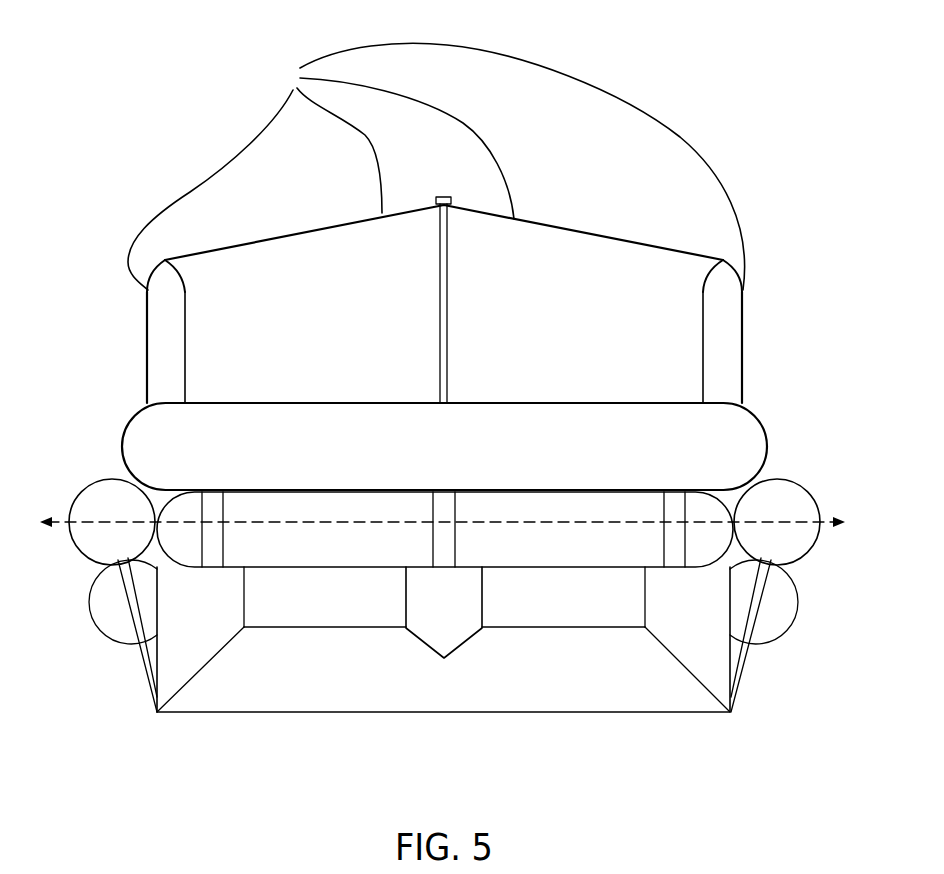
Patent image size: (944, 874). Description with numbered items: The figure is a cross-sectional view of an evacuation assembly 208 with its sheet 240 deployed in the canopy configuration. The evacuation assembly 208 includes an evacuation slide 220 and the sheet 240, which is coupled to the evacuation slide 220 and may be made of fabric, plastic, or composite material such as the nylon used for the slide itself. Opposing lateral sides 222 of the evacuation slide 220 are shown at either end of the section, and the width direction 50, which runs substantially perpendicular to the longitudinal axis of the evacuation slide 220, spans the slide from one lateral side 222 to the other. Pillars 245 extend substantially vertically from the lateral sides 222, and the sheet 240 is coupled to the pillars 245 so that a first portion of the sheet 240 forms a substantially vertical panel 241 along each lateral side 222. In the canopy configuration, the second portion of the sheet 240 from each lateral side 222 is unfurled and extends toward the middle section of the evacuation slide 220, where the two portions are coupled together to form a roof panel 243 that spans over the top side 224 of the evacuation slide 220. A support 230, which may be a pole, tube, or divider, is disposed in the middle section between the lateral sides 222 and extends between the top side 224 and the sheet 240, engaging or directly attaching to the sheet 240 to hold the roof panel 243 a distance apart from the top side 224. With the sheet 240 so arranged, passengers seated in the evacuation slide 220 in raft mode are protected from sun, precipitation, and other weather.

The evacuation assembly 208 is at (130, 56).
The sheet 240 is at (436, 166).
The roof panel 243 is at (303, 233).
The support 230 is at (447, 280).
The lateral side 222 is at (64, 384).
The substantially vertical panel 241 is at (147, 354).
The pillar 245 is at (177, 294).
The top side 224 is at (361, 352).
The evacuation slide 220 is at (776, 448).
The width direction 50 is at (106, 525).